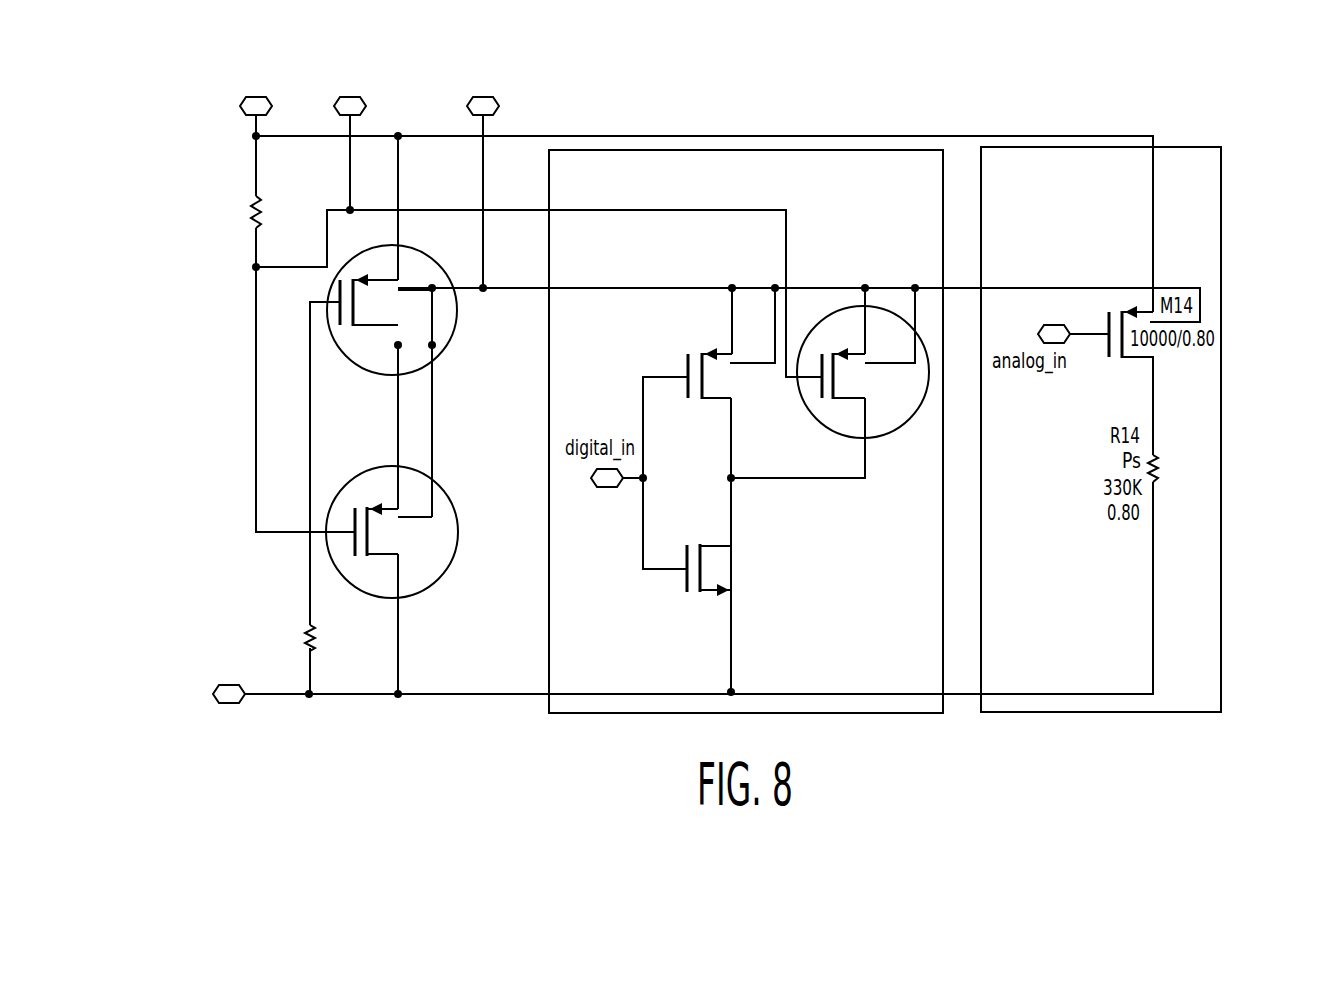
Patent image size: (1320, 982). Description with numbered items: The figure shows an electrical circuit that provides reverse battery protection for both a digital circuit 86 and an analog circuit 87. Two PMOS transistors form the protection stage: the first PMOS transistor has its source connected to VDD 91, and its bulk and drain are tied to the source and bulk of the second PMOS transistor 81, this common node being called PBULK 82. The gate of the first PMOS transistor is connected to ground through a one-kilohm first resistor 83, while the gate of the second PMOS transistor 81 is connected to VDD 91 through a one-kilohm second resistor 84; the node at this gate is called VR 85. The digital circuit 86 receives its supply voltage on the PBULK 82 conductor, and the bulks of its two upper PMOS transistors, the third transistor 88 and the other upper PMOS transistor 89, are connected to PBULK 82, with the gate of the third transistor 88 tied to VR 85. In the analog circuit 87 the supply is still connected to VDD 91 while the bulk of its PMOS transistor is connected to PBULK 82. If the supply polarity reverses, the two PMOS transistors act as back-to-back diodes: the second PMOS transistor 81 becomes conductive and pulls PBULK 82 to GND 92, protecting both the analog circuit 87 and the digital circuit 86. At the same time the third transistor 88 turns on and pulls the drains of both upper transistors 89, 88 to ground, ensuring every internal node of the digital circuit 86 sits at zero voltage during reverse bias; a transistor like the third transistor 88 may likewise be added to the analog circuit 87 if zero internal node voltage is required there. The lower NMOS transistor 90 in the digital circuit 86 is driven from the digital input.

The second PMOS transistor 81 is at (452, 496).
The PBULK node 82 is at (483, 95).
The resistor R1 83 is at (306, 626).
The resistor R2 84 is at (246, 213).
The VR node 85 is at (350, 95).
The digital circuit 86 is at (548, 644).
The analog circuit 87 is at (1222, 636).
The PMOS transistor M3 88 is at (888, 437).
The upper PMOS transistor 89 is at (685, 362).
The transistor M11 90 is at (685, 585).
The VDD 91 is at (256, 95).
The GND 92 is at (229, 683).